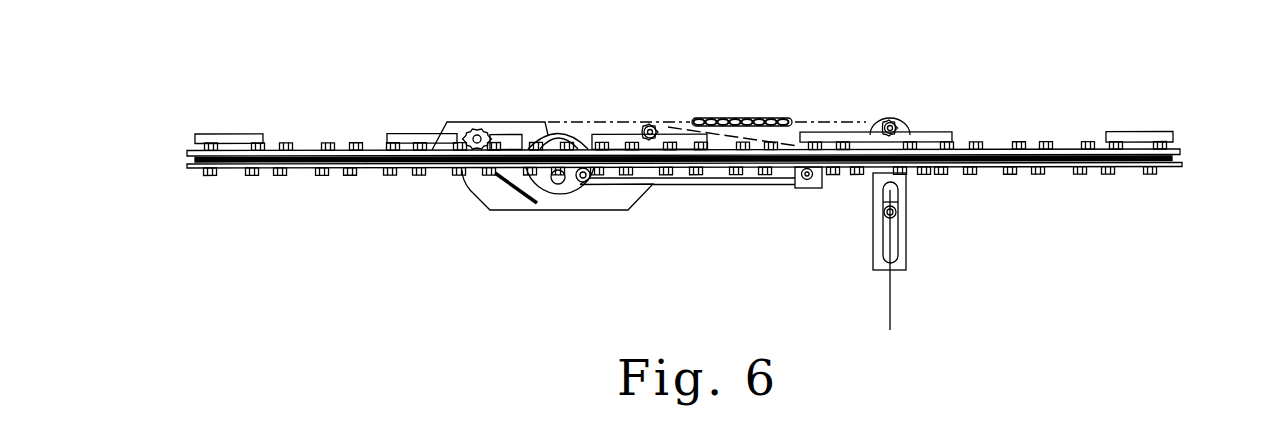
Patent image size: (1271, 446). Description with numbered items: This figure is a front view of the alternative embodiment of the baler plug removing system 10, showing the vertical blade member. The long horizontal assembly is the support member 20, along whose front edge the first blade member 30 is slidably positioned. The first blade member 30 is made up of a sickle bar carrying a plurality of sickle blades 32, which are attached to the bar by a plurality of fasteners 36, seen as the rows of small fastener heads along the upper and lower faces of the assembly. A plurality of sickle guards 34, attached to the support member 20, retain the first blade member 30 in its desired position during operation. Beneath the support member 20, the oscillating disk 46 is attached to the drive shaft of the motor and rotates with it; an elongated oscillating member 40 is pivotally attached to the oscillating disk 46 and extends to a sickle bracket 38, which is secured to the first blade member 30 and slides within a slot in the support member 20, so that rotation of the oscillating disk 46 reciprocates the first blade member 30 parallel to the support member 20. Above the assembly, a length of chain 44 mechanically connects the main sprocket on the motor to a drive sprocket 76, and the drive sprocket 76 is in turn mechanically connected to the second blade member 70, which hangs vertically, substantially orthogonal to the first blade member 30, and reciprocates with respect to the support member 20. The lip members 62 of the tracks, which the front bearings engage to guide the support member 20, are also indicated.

The baler plug removing system 10 is at (222, 78).
The support member 20 is at (1172, 168).
The first blade member 30 is at (1181, 150).
The sickle blades 32 is at (1080, 160).
The sickle guards 34 is at (1152, 133).
The fasteners 36 is at (1017, 143).
The sickle bracket 38 is at (800, 189).
The oscillating member 40 is at (721, 180).
The chain 44 is at (748, 118).
The oscillating disk 46 is at (552, 197).
The lip members 62 is at (588, 182).
The second blade member 70 is at (925, 301).
The drive sprocket 76 is at (887, 119).